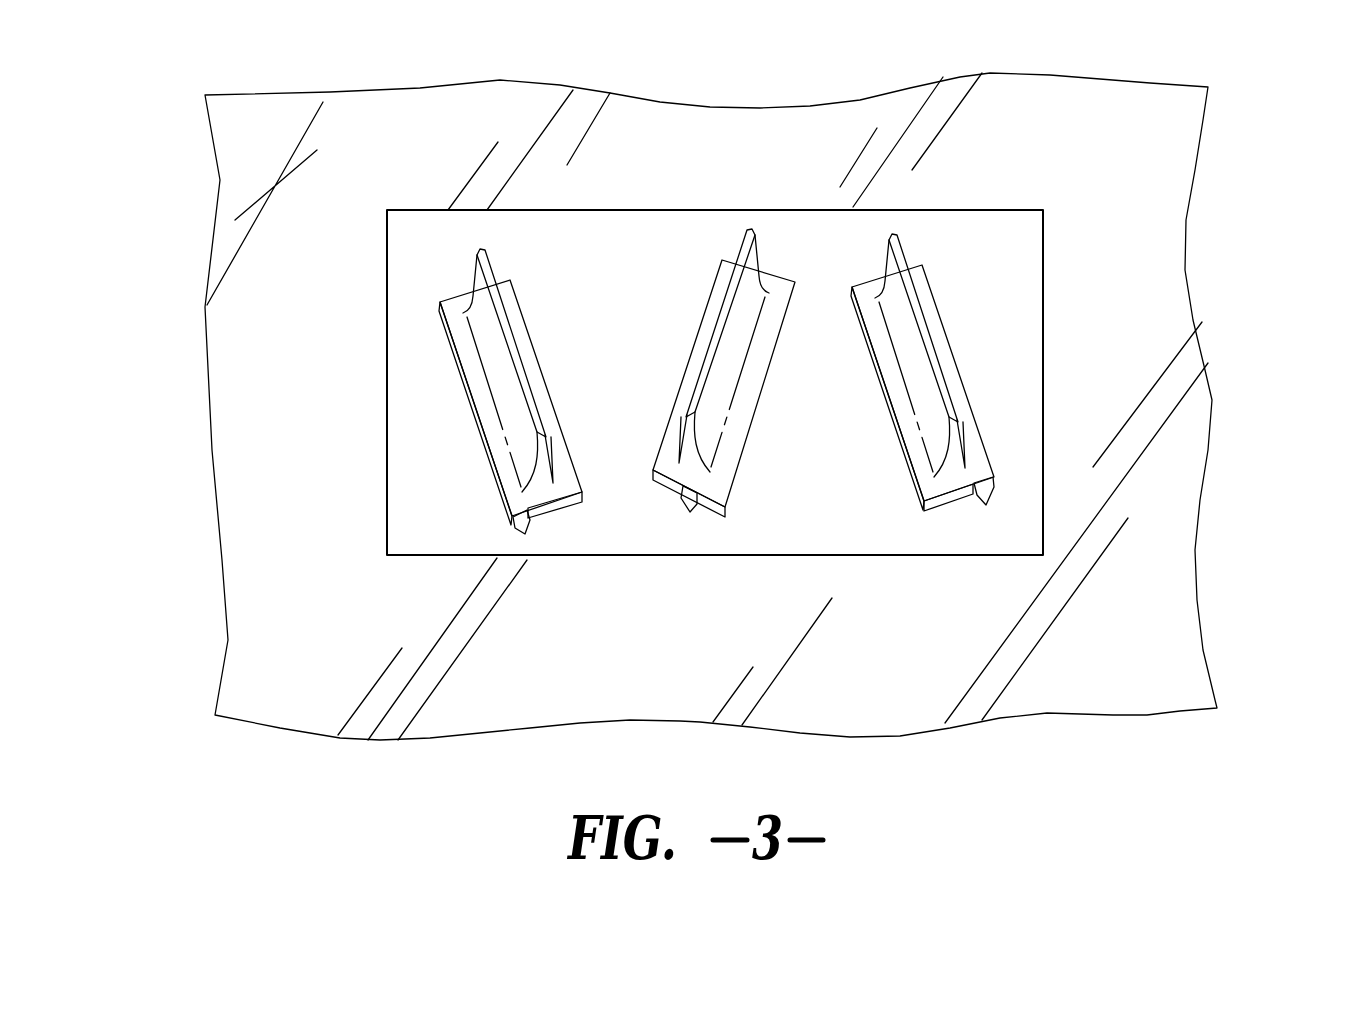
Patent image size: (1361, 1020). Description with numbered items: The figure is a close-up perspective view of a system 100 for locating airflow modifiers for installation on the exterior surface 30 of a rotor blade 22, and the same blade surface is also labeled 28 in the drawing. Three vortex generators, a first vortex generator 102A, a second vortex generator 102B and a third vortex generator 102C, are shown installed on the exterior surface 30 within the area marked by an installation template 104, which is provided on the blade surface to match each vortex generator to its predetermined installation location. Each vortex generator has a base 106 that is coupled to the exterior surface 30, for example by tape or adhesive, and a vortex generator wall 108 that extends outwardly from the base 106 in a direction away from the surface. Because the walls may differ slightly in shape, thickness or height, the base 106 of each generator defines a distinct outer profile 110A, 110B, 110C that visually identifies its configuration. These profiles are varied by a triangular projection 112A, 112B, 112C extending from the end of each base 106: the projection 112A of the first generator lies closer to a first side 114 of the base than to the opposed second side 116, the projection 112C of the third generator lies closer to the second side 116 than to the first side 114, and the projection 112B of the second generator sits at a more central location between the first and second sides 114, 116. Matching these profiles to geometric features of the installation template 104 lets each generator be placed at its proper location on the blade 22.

The rotor blade 22 is at (265, 128).
The panel surface 28 is at (672, 386).
The exterior surface 30 is at (373, 125).
The system 100 is at (738, 386).
The first vortex generator 102A is at (440, 272).
The second vortex generator 102B is at (752, 492).
The third vortex generator 102C is at (947, 272).
The installation template 104 is at (383, 490).
The base 106 is at (483, 458).
The vortex generator wall 108 is at (517, 338).
The outer profile 110A is at (447, 342).
The outer profile 110B is at (702, 312).
The outer profile 110C is at (880, 398).
The projection 112A is at (530, 533).
The projection 112B is at (690, 497).
The projection 112C is at (986, 508).
The first side 114 is at (462, 390).
The second side 116 is at (550, 400).